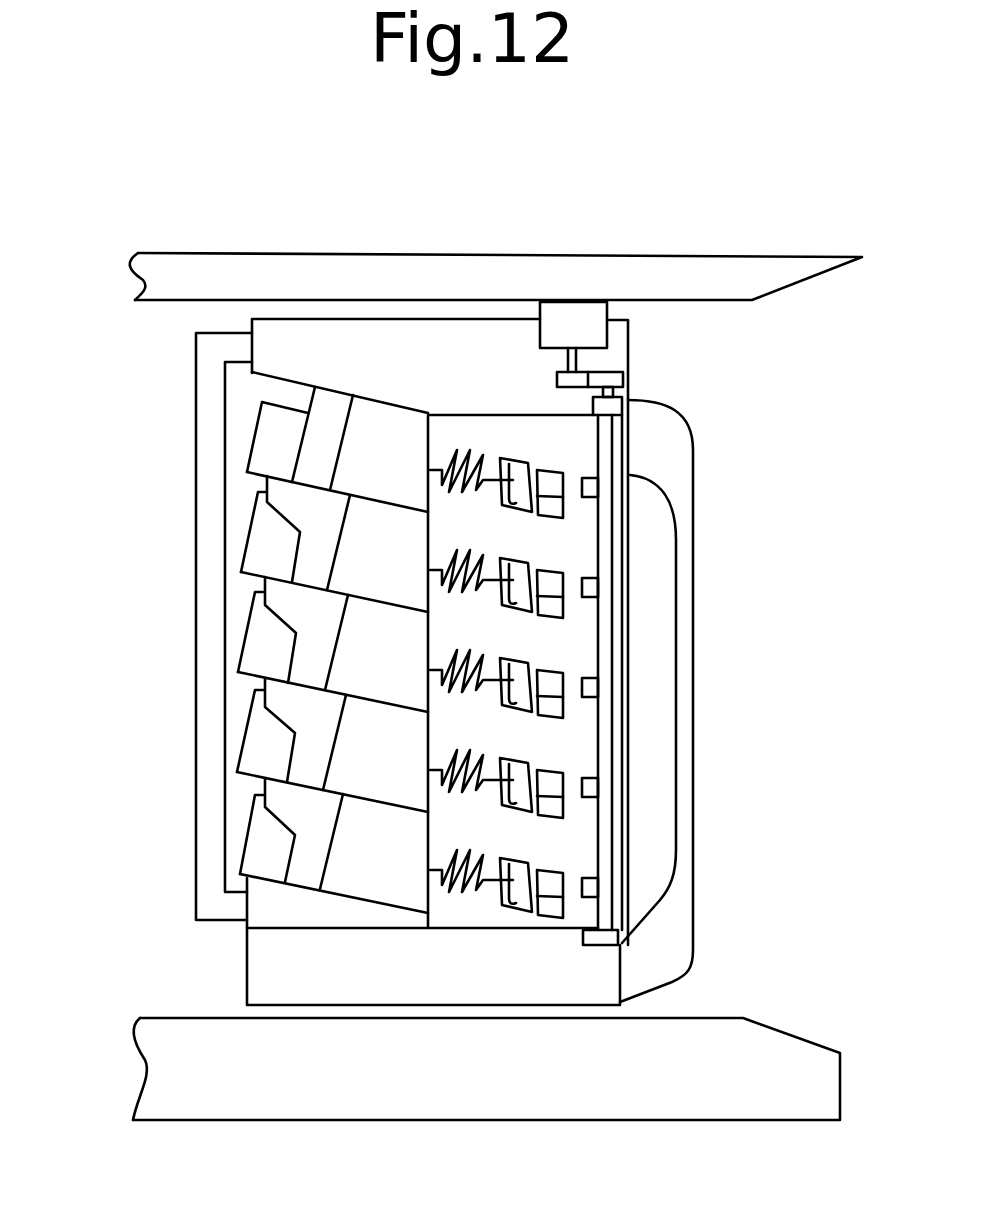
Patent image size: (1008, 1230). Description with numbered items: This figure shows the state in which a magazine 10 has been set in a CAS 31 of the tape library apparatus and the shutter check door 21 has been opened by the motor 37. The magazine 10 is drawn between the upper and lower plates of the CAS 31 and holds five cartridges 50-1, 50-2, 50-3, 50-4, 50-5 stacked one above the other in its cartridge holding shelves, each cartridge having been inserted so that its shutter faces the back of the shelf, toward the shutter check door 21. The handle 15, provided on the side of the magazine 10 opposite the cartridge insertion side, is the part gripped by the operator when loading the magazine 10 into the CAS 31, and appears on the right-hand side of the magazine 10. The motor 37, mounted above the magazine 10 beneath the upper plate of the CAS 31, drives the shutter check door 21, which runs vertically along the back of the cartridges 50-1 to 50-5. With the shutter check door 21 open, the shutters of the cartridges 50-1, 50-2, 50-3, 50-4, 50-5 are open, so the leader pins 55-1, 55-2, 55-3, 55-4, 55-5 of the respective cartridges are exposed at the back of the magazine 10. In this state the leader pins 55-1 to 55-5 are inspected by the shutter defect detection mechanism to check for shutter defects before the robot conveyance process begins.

The magazine 10 is at (740, 486).
The handle 15 is at (697, 720).
The shutter check door 21 is at (608, 448).
The CAS 31 is at (500, 251).
The motor 37 is at (595, 302).
The cartridge 50-1 is at (243, 441).
The cartridge 50-2 is at (242, 531).
The cartridge 50-3 is at (241, 628).
The cartridge 50-4 is at (240, 725).
The cartridge 50-5 is at (240, 828).
The leader pin 55-1 is at (545, 495).
The leader pin 55-2 is at (545, 595).
The leader pin 55-3 is at (545, 695).
The leader pin 55-4 is at (545, 795).
The leader pin 55-5 is at (548, 893).